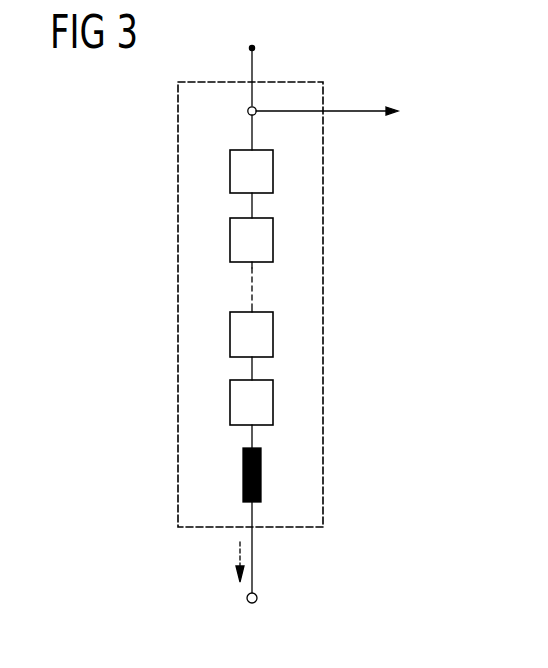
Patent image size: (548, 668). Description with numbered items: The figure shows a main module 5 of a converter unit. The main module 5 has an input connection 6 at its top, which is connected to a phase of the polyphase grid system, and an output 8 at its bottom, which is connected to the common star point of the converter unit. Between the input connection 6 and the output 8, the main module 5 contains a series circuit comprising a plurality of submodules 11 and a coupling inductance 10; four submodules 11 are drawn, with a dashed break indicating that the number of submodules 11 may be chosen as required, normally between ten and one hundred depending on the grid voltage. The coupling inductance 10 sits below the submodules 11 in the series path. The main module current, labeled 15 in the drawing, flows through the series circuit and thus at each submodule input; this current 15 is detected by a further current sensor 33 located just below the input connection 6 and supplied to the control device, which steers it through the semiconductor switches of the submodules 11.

The main module 5 is at (178, 291).
The input connection 6 is at (252, 48).
The further current sensor 33 is at (248, 111).
The semiconductor switch 15 is at (195, 561).
The submodule 11 is at (273, 172).
The coupling inductance 10 is at (261, 478).
The output 8 is at (258, 596).